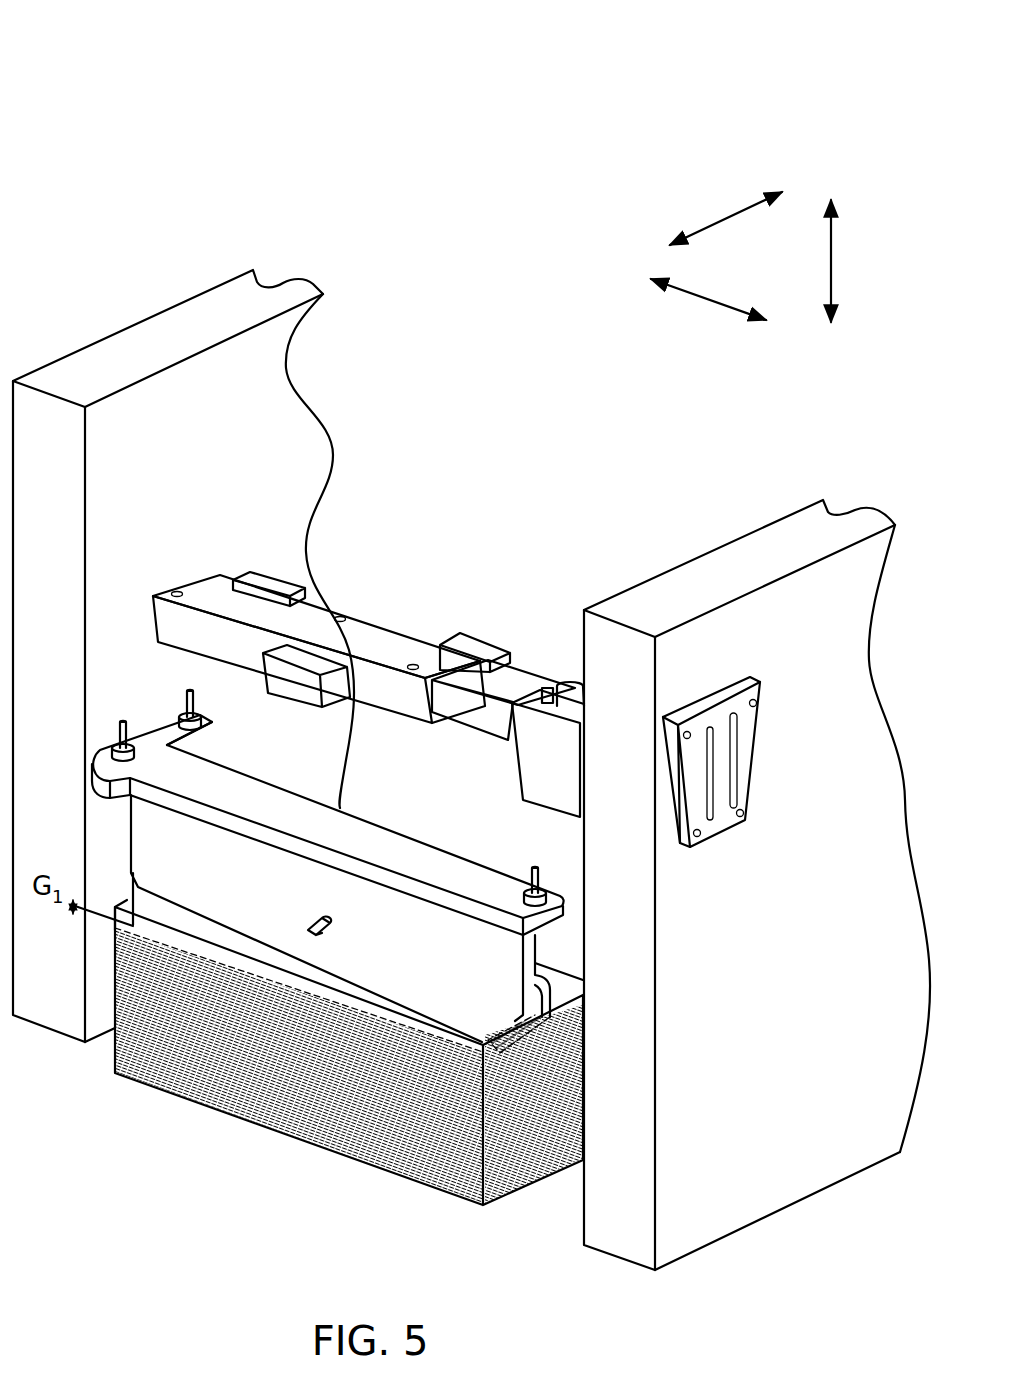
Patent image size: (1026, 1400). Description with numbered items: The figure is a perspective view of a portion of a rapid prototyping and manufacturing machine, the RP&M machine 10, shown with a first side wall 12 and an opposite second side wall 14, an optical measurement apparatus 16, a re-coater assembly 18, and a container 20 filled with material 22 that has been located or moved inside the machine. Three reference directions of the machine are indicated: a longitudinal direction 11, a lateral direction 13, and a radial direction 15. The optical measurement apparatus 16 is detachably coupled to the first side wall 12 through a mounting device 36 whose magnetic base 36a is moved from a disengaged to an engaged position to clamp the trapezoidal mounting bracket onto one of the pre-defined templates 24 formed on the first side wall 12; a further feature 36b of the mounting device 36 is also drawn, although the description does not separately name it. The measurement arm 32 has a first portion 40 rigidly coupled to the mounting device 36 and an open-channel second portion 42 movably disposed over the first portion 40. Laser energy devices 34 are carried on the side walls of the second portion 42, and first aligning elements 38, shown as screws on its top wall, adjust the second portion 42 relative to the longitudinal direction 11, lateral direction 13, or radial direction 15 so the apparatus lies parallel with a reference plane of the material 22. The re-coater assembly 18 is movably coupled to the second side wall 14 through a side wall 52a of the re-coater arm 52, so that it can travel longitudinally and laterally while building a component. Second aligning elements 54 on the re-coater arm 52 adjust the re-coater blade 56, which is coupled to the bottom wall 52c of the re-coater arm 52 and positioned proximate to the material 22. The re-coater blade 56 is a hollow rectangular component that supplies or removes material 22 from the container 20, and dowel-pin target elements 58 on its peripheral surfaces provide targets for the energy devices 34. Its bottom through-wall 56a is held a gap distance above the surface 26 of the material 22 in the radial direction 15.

The RP&M machine 10 is at (142, 60).
The longitudinal direction 11 is at (727, 214).
The first side wall 12 is at (770, 535).
The lateral direction 13 is at (733, 308).
The second side wall 14 is at (200, 302).
The radial direction 15 is at (833, 257).
The optical measurement apparatus 16 is at (206, 582).
The re-coater assembly 18 is at (284, 800).
The container 20 is at (310, 1052).
The material 22 is at (196, 1068).
The pre-defined template 24 is at (732, 810).
The surface 26 is at (113, 917).
The measurement arm 32 is at (403, 720).
The energy devices 34 is at (270, 680).
The mounting device 36 is at (545, 784).
The magnetic base 36a is at (556, 746).
The fastener 36b is at (574, 690).
The first aligning elements 38 is at (176, 589).
The first portion 40 is at (472, 720).
The second portion 42 is at (308, 612).
The re-coater arm 52 is at (328, 784).
The side wall 52a is at (120, 745).
The bottom wall 52c is at (262, 843).
The second aligning elements 54 is at (152, 752).
The re-coater blade 56 is at (170, 914).
The bottom through-wall 56a is at (420, 1033).
The target elements 58 is at (336, 924).